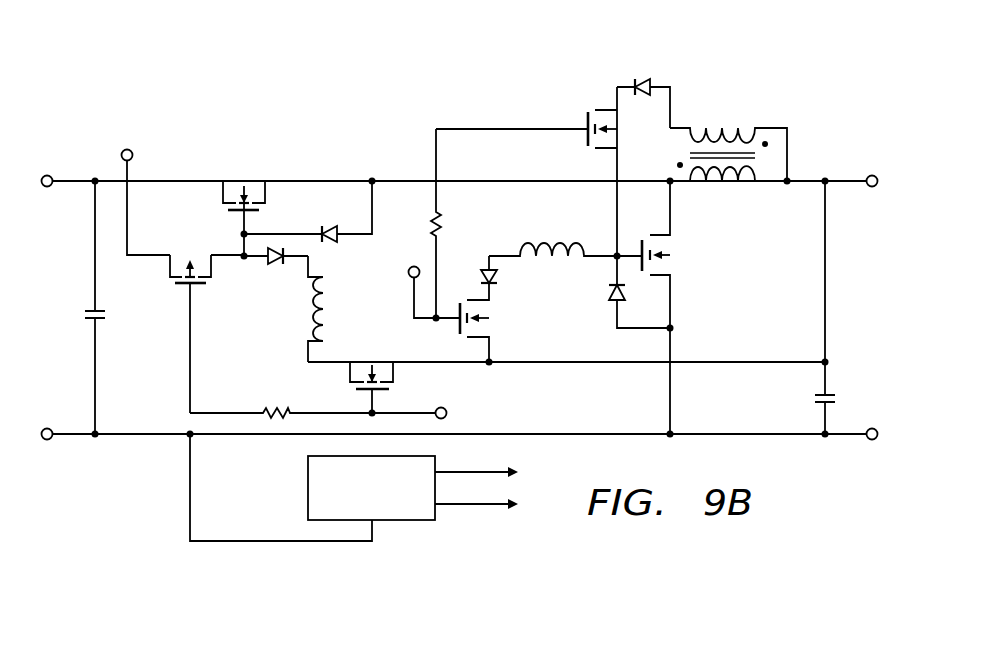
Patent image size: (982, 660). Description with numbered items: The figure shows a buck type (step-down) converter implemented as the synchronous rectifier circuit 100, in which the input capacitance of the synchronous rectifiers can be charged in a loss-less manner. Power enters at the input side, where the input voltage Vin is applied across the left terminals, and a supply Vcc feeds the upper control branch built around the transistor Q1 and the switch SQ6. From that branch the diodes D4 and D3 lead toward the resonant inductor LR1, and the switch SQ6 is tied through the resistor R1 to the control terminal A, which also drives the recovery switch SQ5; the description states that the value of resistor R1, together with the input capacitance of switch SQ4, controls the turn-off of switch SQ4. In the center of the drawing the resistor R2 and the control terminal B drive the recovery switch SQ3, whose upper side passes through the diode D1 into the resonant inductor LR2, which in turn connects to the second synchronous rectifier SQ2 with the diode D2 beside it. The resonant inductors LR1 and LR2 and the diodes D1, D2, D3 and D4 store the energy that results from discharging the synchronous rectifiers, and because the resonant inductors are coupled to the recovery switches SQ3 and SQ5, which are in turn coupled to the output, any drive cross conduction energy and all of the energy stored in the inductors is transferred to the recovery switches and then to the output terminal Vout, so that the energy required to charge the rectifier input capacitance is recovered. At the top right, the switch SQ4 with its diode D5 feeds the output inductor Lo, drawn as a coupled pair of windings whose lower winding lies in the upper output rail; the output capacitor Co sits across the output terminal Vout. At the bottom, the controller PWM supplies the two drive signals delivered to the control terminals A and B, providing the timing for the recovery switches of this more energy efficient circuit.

The synchronous rectifier circuit 100 is at (152, 580).
The input capacitor / input voltage Vin is at (77, 315).
The supply voltage terminal Vcc is at (141, 192).
The MOSFET Q1 is at (244, 208).
The switch SQ6 is at (207, 319).
The diode D4 is at (308, 211).
The diode D3 is at (276, 268).
The resonant inductor LR1 is at (335, 309).
The resistor R1 is at (313, 403).
The control terminal A is at (450, 415).
The recovery switch SQ5 is at (568, 375).
The resistor R2 is at (423, 223).
The control terminal B is at (427, 291).
The recovery switch SQ3 is at (495, 322).
The diode D1 is at (477, 273).
The resonant inductor LR2 is at (565, 237).
The second synchronous rectifier SQ2 is at (677, 307).
The diode D2 is at (624, 292).
The switch SQ4 is at (547, 171).
The diode D5 is at (643, 91).
The output inductor / coupled inductor Lo is at (728, 145).
The output capacitor Co is at (838, 400).
The output terminal Vout is at (871, 310).
The PWM controller PWM is at (364, 487).